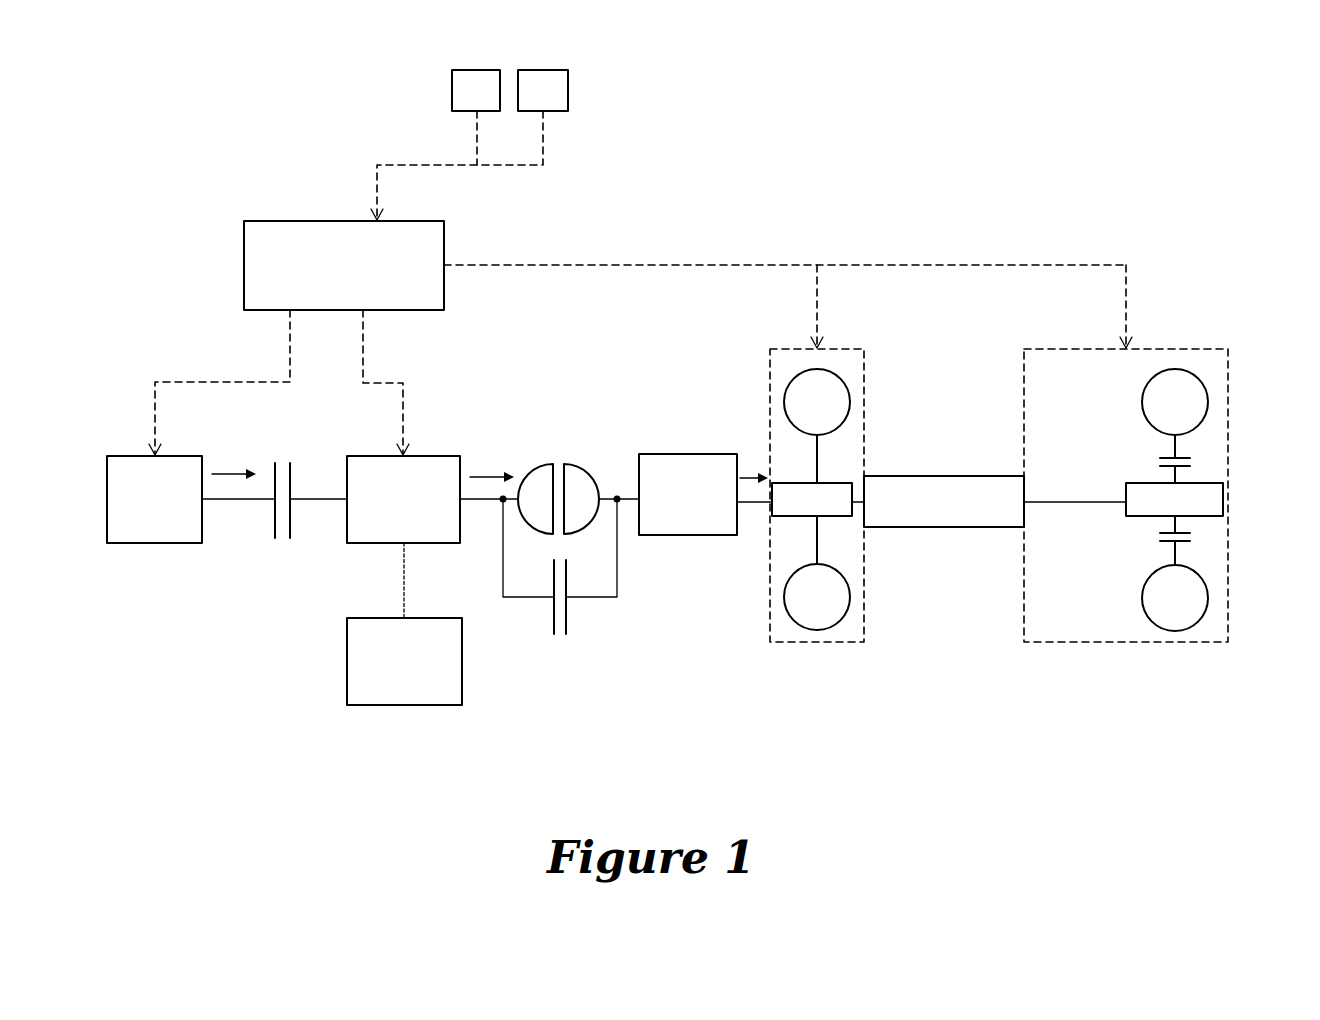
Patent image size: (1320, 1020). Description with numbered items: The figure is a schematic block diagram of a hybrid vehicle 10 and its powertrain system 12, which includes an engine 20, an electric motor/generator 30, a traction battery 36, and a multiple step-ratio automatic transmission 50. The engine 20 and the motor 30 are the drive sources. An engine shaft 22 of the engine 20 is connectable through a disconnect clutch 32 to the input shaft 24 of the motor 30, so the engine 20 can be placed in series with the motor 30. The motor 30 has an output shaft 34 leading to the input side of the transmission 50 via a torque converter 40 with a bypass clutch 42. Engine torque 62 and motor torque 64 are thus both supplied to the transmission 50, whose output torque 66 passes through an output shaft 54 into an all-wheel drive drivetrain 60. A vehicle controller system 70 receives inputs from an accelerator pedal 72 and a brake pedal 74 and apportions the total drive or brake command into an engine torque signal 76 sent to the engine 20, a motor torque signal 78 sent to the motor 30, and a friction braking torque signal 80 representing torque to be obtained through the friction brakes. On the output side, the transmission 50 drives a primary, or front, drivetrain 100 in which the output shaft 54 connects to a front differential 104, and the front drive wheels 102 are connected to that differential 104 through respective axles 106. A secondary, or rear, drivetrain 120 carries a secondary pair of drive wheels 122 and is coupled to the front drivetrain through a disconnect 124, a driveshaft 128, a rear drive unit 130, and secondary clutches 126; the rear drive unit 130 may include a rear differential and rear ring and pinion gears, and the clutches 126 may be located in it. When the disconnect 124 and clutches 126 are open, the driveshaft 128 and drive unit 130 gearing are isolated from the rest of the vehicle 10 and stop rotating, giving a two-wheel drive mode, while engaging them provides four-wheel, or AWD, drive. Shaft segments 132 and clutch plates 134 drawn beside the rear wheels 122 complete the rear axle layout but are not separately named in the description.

The hybrid vehicle 10 is at (824, 158).
The powertrain system 12 is at (176, 176).
The engine 20 is at (178, 456).
The engine shaft 22 is at (257, 506).
The input shaft 24 is at (335, 506).
The electric motor/generator 30 is at (434, 456).
The disconnect clutch 32 is at (292, 482).
The output shaft 34 is at (489, 506).
The traction battery 36 is at (464, 672).
The torque converter 40 is at (577, 470).
The bypass clutch 42 is at (568, 620).
The transmission 50 is at (678, 454).
The output shaft 54 is at (758, 508).
The drivetrain 60 is at (1008, 246).
The engine torque 62 is at (236, 474).
The motor torque 64 is at (490, 478).
The torque 66 is at (742, 478).
The vehicle controller system 70 is at (264, 221).
The accelerator pedal 72 is at (476, 117).
The brake pedal 74 is at (469, 145).
The engine torque signal 76 is at (203, 382).
The motor torque signal 78 is at (378, 383).
The friction braking torque signal 80 is at (625, 265).
The primary drivetrain 100 is at (845, 349).
The drive wheels 102 is at (850, 388).
The front differential 104 is at (850, 483).
The axles 106 is at (830, 439).
The secondary drivetrain 120 is at (1190, 349).
The secondary drive wheels 122 is at (1210, 396).
The disconnect 124 is at (960, 476).
The secondary clutches 126 is at (1160, 462).
The driveshaft 128 is at (1038, 502).
The rear drive unit 130 is at (1226, 501).
The rear half shafts 132 is at (1193, 456).
The clutch plates 134 is at (1193, 472).